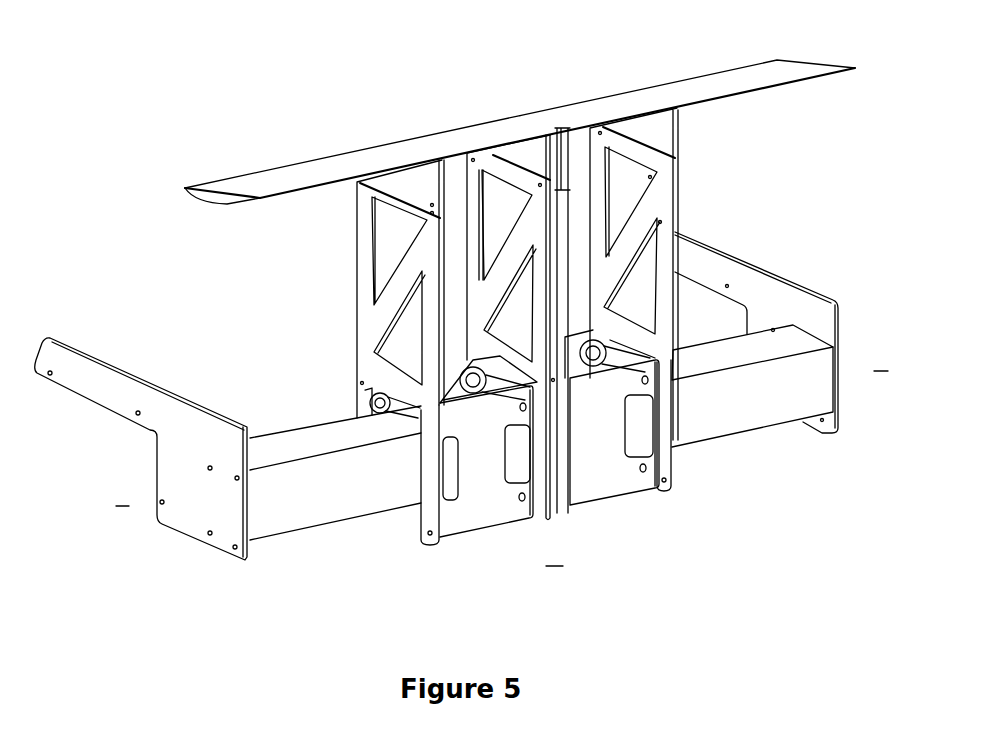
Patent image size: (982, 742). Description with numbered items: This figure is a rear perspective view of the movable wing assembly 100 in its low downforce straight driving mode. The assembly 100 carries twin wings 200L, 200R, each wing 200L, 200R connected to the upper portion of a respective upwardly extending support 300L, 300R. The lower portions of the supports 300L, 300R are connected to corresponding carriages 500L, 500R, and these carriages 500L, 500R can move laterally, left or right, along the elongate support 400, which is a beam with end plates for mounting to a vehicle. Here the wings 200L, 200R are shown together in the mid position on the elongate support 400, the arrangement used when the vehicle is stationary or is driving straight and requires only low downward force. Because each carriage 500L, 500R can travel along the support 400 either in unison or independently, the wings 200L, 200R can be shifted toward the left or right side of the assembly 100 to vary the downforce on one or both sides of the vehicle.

The movable wing assembly 100 is at (145, 239).
The left wing 200L is at (304, 134).
The right wing 200R is at (606, 77).
The left upwardly extending support 300L is at (334, 278).
The right upwardly extending support 300R is at (693, 196).
The elongate support 400 is at (747, 449).
The left carriage 500L is at (495, 534).
The right carriage 500R is at (629, 508).